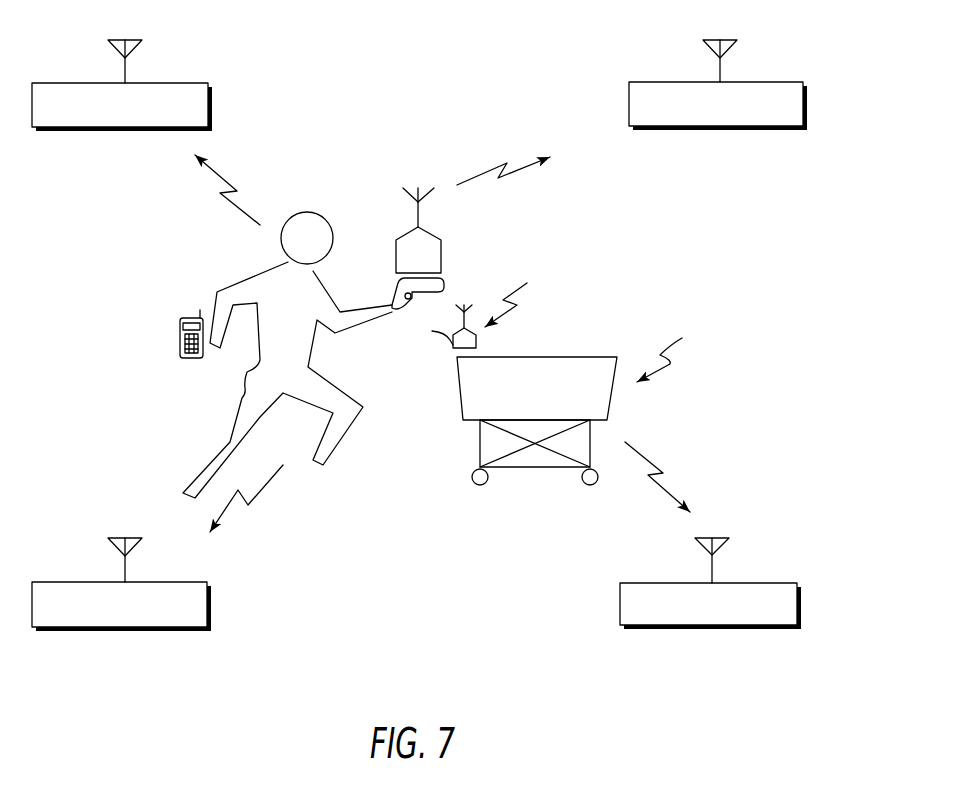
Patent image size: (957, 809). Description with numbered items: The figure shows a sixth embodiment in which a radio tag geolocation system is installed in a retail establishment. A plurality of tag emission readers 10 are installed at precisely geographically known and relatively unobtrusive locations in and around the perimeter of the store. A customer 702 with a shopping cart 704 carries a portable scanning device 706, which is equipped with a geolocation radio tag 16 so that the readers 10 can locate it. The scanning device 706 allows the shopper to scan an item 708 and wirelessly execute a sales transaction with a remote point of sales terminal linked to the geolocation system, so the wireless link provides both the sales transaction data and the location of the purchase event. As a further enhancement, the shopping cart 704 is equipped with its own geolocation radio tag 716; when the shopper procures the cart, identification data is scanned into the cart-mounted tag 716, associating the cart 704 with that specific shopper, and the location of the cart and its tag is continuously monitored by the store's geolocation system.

The tag emission reader 10 is at (158, 83).
The geolocation radio tag 16 is at (432, 235).
The customer 702 is at (240, 397).
The shopping cart 704 is at (462, 390).
The portable scanning device 706 is at (445, 283).
The item 708 is at (180, 335).
The geolocation radio tag 716 is at (452, 348).